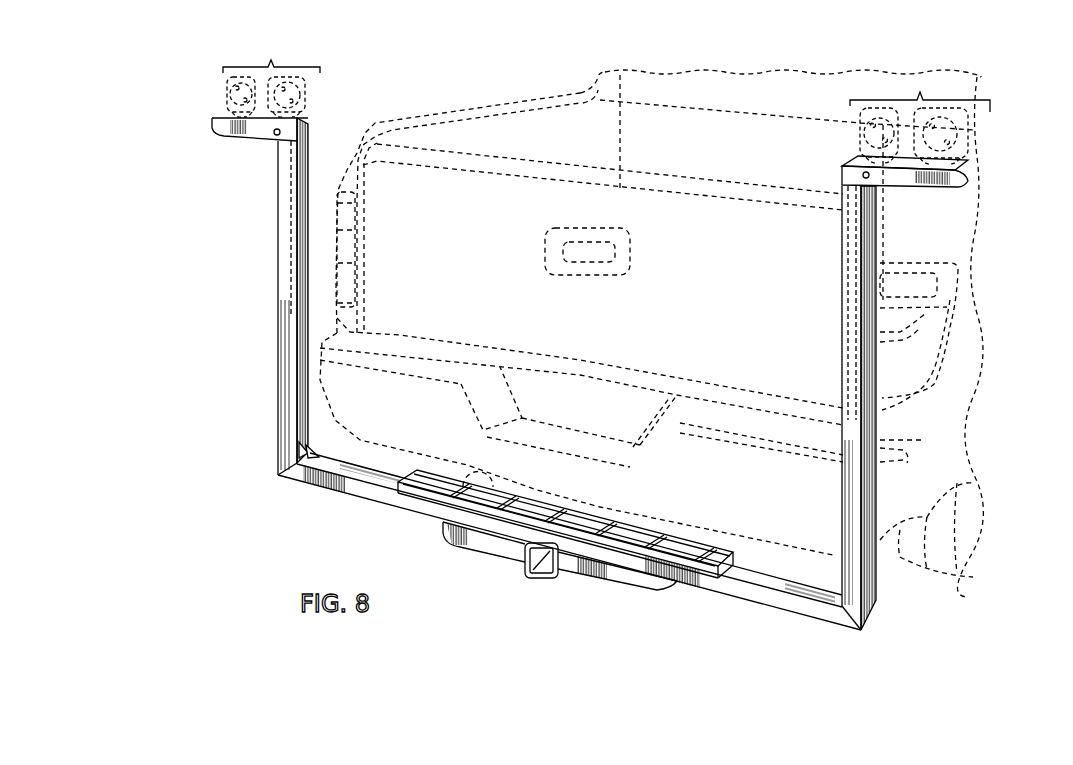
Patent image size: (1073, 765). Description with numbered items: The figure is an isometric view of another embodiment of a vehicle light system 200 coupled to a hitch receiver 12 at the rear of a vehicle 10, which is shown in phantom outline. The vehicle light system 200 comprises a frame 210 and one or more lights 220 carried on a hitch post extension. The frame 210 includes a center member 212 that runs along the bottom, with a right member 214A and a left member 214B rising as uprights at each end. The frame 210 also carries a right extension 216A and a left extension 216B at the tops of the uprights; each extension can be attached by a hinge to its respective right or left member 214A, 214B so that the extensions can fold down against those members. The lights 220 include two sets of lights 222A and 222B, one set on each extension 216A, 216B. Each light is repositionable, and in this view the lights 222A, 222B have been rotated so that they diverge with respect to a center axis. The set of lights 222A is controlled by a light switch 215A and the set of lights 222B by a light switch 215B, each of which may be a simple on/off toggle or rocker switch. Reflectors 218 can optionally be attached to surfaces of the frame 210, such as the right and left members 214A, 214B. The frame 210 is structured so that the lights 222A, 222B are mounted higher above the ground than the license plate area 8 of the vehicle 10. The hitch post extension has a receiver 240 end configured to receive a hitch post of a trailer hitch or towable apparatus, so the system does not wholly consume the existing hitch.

The license plate area 8 is at (578, 406).
The vehicle 10 is at (698, 246).
The hitch receiver 12 is at (600, 506).
The vehicle light system 200 is at (970, 342).
The frame 210 is at (258, 447).
The center member 212 is at (350, 488).
The right member 214A is at (876, 513).
The left member 214B is at (532, 296).
The light switch 215A is at (860, 175).
The light switch 215B is at (276, 137).
The right extension 216A is at (940, 183).
The left extension 216B is at (228, 127).
The reflectors 218 is at (289, 283).
The lights 220 is at (328, 103).
The set of lights 222A is at (920, 110).
The set of lights 222B is at (271, 77).
The receiver 240 is at (520, 558).